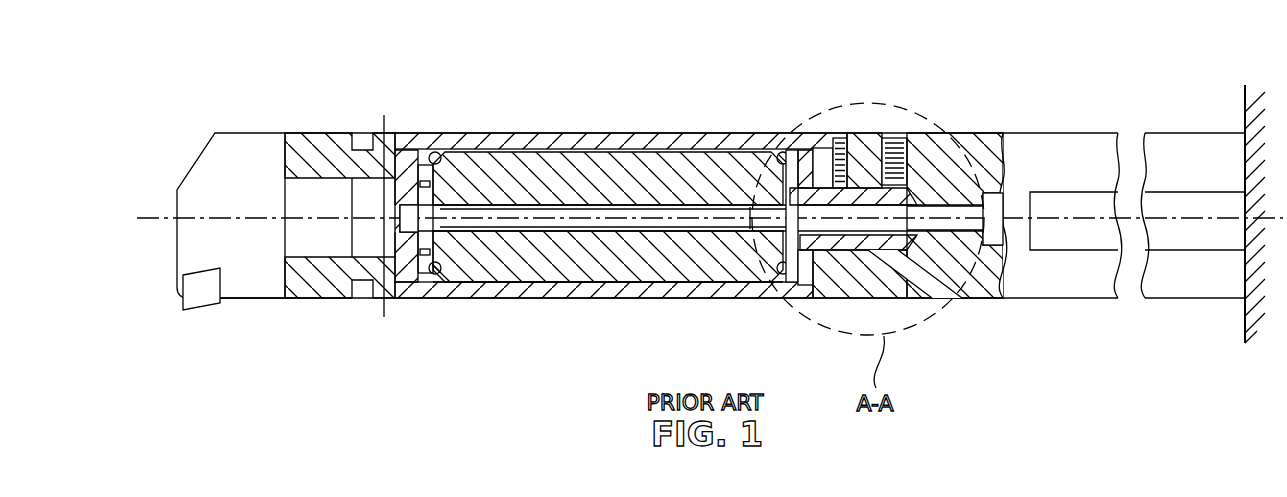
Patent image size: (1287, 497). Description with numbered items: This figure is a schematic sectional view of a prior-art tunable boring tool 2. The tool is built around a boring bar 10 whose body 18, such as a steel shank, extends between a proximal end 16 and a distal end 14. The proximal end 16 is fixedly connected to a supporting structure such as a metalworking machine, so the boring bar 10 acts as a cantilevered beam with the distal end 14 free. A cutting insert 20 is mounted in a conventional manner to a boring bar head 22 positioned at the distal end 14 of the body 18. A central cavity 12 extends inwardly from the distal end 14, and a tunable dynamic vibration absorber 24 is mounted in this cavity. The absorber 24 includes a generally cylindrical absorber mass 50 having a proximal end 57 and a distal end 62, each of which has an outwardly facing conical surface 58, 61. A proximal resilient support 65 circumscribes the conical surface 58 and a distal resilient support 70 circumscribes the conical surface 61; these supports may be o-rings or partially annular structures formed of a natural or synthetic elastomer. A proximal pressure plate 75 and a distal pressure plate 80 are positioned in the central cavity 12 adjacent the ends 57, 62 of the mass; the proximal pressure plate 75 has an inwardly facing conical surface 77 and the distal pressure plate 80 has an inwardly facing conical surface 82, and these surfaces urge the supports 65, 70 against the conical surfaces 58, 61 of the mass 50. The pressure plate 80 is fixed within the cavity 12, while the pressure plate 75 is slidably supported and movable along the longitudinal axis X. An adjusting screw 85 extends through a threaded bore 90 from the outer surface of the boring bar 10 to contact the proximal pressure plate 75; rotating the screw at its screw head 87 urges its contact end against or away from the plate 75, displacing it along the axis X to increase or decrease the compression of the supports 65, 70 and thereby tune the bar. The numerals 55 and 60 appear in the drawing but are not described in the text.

The boring tool 2 is at (638, 96).
The boring bar 10 is at (520, 306).
The central cavity 12 is at (650, 290).
The distal end 14 is at (285, 160).
The proximal end 16 is at (1007, 165).
The body 18 is at (612, 146).
The cutting insert 20 is at (202, 299).
The boring bar head 22 is at (220, 248).
The tunable dynamic vibration absorber 24 is at (565, 292).
The absorber mass 50 is at (665, 172).
The lower piston body 55 is at (713, 272).
The proximal end 57 is at (768, 187).
The conical surface 58 is at (793, 190).
The upper piston body 60 is at (535, 165).
The conical surface 61 is at (446, 148).
The distal end 62 is at (390, 252).
The proximal resilient support 65 is at (787, 152).
The distal resilient support 70 is at (430, 152).
The proximal pressure plate 75 is at (840, 150).
The conical surface 77 is at (842, 286).
The distal pressure plate 80 is at (404, 184).
The conical surface 82 is at (470, 290).
The adjusting screw 85 is at (913, 286).
The screw head 87 is at (946, 292).
The bore 90 is at (1004, 280).
The longitudinal axis X is at (1135, 220).